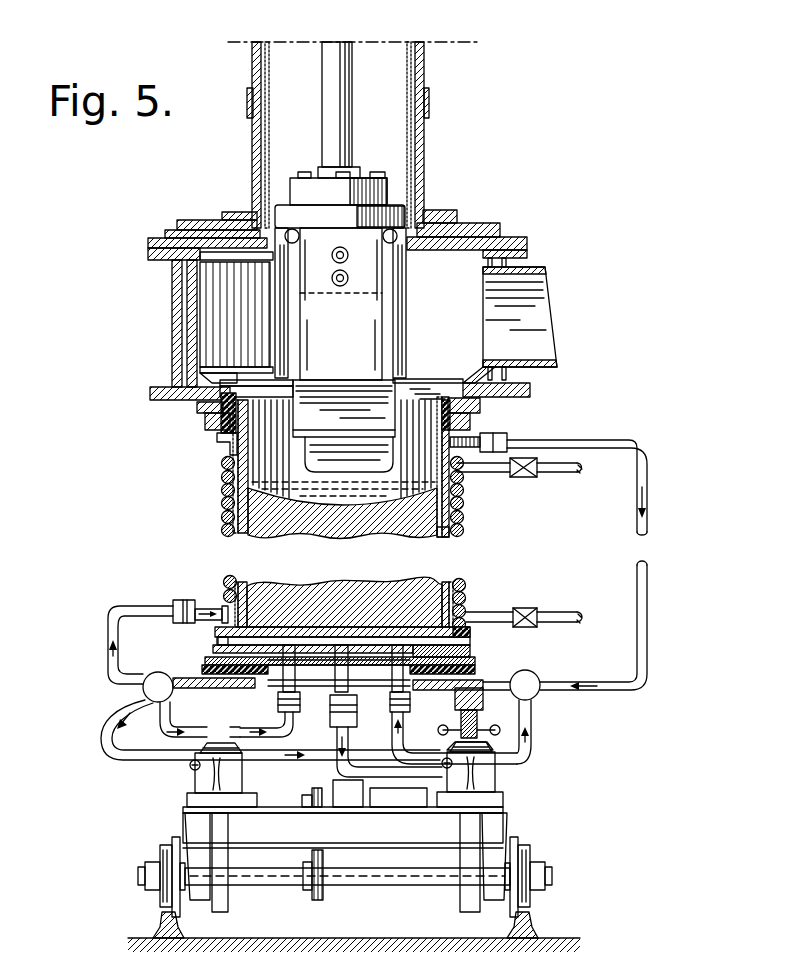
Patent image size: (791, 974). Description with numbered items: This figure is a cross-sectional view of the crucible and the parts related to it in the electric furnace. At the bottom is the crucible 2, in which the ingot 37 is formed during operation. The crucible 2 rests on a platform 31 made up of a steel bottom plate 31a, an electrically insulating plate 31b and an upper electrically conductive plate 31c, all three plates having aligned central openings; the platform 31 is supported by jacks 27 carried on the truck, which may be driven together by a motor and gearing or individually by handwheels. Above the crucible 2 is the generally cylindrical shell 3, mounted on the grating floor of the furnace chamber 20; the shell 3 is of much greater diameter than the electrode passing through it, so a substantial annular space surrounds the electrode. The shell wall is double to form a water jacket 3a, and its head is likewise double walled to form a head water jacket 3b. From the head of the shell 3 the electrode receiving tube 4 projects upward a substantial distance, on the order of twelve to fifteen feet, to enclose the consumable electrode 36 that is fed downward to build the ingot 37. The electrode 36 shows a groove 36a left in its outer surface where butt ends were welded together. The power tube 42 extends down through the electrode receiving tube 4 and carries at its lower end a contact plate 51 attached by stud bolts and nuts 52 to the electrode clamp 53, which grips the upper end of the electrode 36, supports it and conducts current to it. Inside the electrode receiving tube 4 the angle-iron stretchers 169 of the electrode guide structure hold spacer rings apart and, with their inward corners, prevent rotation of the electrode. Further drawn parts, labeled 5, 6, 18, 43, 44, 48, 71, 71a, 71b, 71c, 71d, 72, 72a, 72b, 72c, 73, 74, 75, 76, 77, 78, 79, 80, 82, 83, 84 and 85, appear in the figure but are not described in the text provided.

The crucible 2 is at (200, 507).
The shell 3 is at (160, 304).
The water jacket 3a is at (185, 330).
The head water jacket 3b is at (202, 222).
The electrode receiving tube 4 is at (252, 175).
The drive unit 5 is at (336, 788).
The sealing assembly 6 is at (486, 669).
The left support column pivot 18 is at (191, 764).
The furnace chamber 20 is at (444, 762).
The jacks 27 is at (483, 703).
The platform 31 is at (301, 678).
The steel bottom plate 31a is at (258, 689).
The electrically insulating plate 31b is at (205, 667).
The upper electrically conductive plate 31c is at (209, 650).
The consumable electrode 36 is at (387, 410).
The groove 36a is at (392, 442).
The ingot 37 is at (268, 582).
The power tube 42 is at (352, 93).
The return pipe 43 is at (637, 691).
The supply pipe 44 is at (507, 438).
The pump connection plate 48 is at (503, 668).
The contact plate 51 is at (290, 190).
The nuts 52 is at (305, 172).
The electrode clamp 53 is at (420, 273).
The seal ring assembly 71 is at (499, 497).
The upper seal ring 71a is at (463, 498).
The lower seal ring 71b is at (464, 515).
The mold wall end 71c is at (445, 536).
The lower seal block with valve pipe 71d is at (468, 627).
The plate assembly 72 is at (405, 647).
The plate 72a is at (471, 651).
The plate 72b is at (471, 640).
The plate 72c is at (377, 598).
The inlet fitting 73 is at (218, 601).
The sealing rings 74 is at (227, 575).
The lifting piston 75 is at (299, 663).
The central piston 76 is at (340, 651).
The retaining bracket 77 is at (217, 436).
The gland block 78 is at (205, 421).
The packing seal 79 is at (235, 393).
The gland flange 80 is at (197, 410).
The cylinder bottom flange 82 is at (168, 381).
The right gland block 83 is at (481, 430).
The sealing rings 84 is at (222, 467).
The valve 85 is at (530, 476).
The stretchers 169 is at (265, 142).